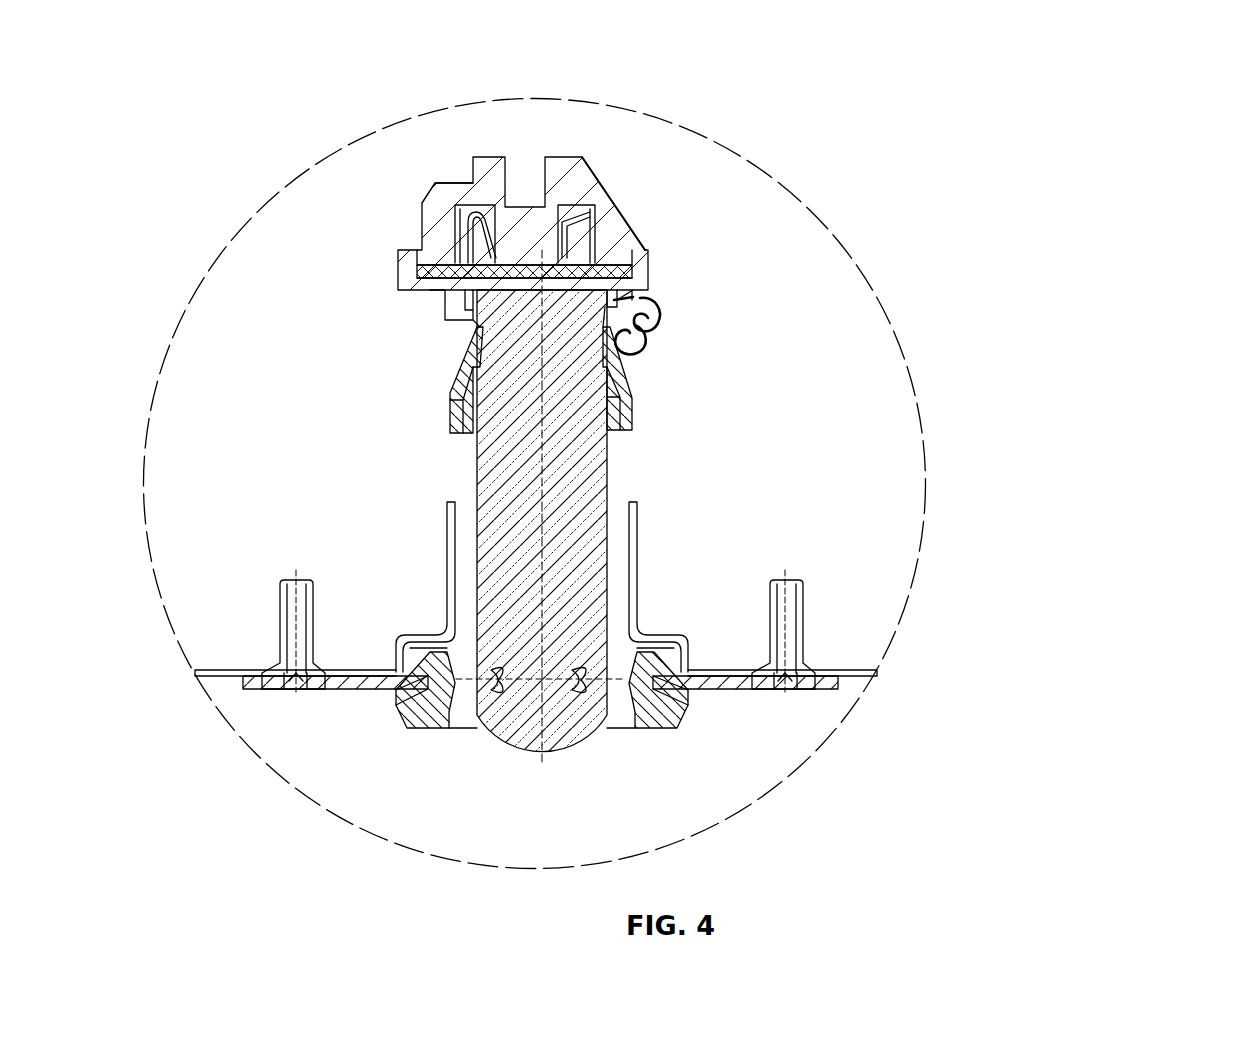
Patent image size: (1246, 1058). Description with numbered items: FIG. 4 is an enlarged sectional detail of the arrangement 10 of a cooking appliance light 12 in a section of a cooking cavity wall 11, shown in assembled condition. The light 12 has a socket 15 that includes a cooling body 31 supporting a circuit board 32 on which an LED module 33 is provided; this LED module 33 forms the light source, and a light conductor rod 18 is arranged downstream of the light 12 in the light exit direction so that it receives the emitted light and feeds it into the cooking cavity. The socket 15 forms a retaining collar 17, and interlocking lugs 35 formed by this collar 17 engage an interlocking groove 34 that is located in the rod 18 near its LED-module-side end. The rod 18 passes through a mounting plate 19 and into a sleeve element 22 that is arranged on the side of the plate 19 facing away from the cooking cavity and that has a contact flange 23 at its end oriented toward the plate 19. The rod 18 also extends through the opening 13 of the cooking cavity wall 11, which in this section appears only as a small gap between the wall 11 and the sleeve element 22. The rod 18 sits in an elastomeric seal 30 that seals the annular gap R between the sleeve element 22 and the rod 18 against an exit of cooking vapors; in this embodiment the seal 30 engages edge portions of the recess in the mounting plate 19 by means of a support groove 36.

The arrangement 10 is at (1027, 175).
The cooking cavity wall 11 is at (858, 668).
The cooking appliance light 12 is at (712, 200).
The opening 13 is at (705, 668).
The socket 15 is at (620, 184).
The retaining collar 17 is at (650, 393).
The light conductor rod 18 is at (600, 470).
The mounting plate 19 is at (350, 688).
The sleeve element 22 is at (640, 580).
The contact flange 23 is at (390, 650).
The elastomeric seal 30 is at (690, 718).
The cooling body 31 is at (536, 184).
The circuit board 32 is at (497, 355).
The LED module 33 is at (445, 322).
The interlocking groove 34 is at (482, 358).
The interlocking lugs 35 is at (453, 358).
The support groove 36 is at (655, 697).
The annular gap R is at (625, 505).